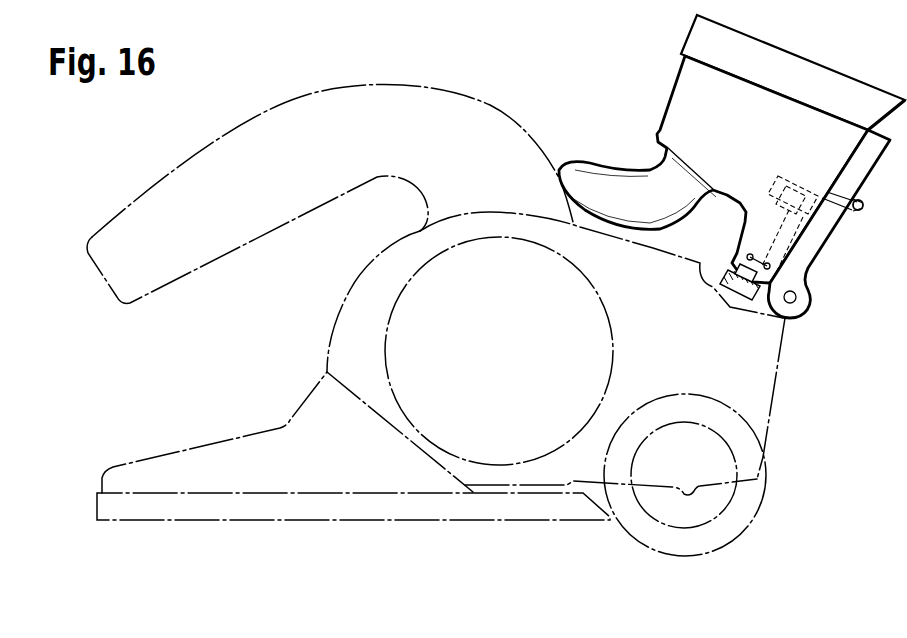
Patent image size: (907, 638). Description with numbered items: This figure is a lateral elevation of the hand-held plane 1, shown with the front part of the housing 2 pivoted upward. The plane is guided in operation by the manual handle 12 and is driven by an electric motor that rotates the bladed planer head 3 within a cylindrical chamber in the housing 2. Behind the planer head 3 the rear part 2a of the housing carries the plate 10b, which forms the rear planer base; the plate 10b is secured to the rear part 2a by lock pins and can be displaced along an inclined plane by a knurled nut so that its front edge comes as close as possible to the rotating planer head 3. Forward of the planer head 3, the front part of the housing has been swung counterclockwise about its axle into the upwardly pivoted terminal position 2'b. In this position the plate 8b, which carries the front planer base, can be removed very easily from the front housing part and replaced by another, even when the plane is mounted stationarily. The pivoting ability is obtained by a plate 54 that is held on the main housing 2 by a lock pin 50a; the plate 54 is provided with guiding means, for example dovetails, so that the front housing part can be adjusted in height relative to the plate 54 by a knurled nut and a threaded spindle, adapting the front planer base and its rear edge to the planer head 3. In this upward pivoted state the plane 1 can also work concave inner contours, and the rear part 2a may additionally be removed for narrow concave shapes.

The hand-held plane 1 is at (513, 112).
The manual handle 12 is at (146, 197).
The rear part of the housing 2a is at (229, 449).
The plate 10b is at (312, 512).
The housing 2 is at (790, 398).
The bladed planer head 3 is at (712, 507).
The plate 8b is at (795, 68).
The terminal position of the front housing part 2'b is at (713, 169).
The plate 54 is at (805, 257).
The lock pin 50a is at (864, 208).